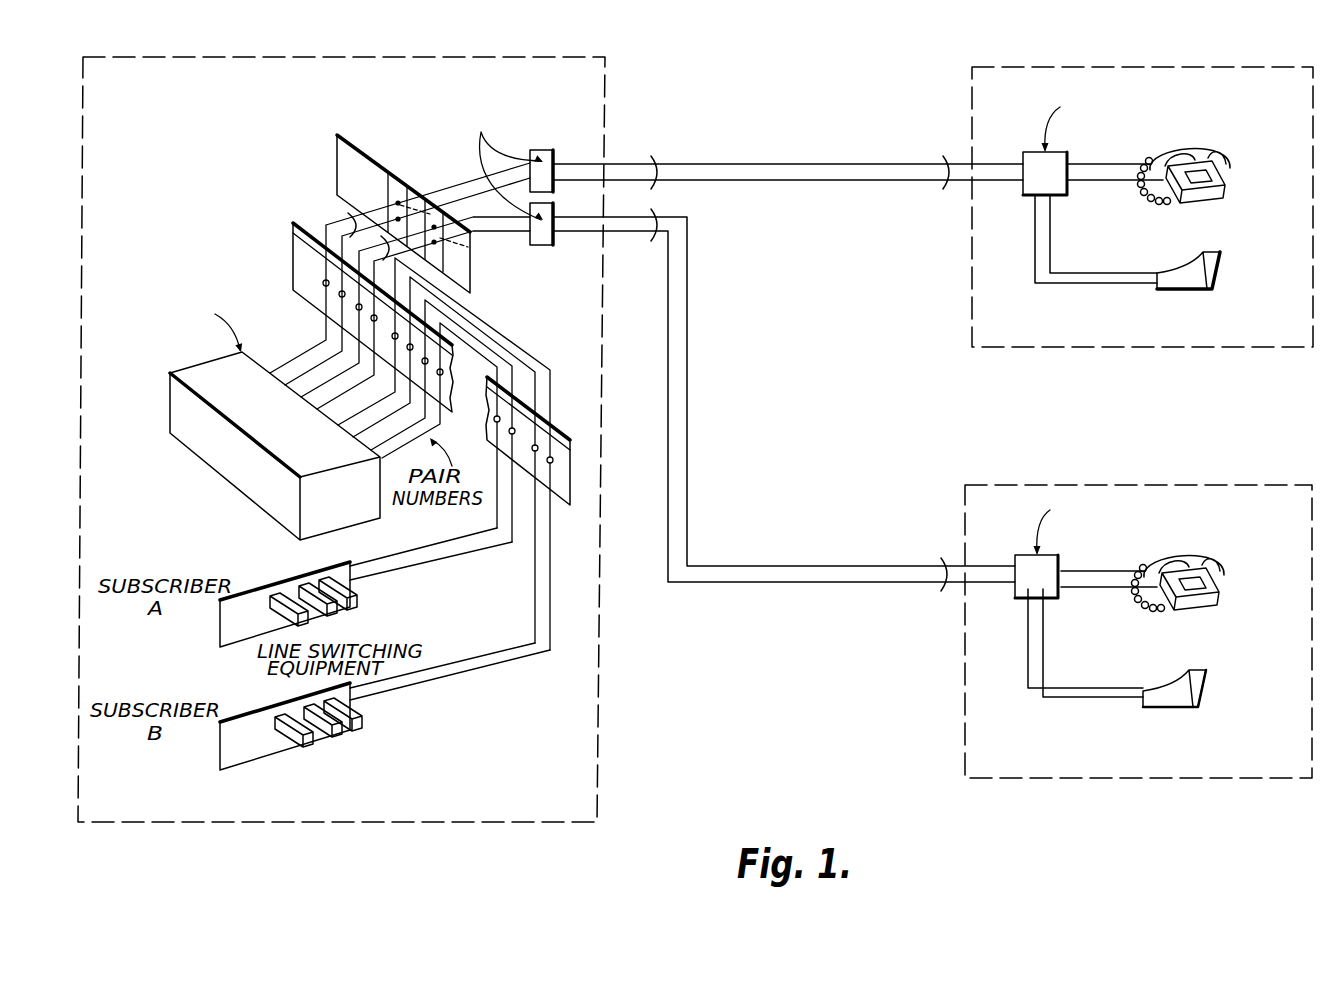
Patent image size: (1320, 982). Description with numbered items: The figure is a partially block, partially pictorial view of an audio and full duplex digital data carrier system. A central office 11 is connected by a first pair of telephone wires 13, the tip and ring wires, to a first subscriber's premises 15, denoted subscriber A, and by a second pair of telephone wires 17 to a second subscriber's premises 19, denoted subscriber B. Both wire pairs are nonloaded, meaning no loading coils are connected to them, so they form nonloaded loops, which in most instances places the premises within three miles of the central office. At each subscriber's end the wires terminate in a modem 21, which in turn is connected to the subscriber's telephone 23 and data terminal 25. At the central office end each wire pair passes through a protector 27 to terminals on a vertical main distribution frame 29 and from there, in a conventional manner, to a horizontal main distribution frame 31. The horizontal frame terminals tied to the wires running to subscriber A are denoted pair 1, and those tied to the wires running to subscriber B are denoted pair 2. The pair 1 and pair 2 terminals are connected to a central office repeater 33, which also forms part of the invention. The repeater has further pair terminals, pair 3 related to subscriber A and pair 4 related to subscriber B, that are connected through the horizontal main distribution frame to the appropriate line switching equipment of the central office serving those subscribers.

The central office 11 is at (585, 691).
The first pair of telephone wires 13 is at (812, 175).
The first subscriber's premises 15 is at (1278, 345).
The second pair of telephone wires 17 is at (822, 578).
The second subscriber's premises 19 is at (1282, 487).
The modem 21 is at (1066, 195).
The telephone 23 is at (1226, 182).
The data terminal 25 is at (1219, 266).
The protector 27 is at (554, 165).
The vertical main distribution frame 29 is at (349, 149).
The horizontal main distribution frame 31 is at (300, 257).
The central office repeater 33 is at (237, 473).
The pair 1 is at (400, 274).
The pair 2 is at (415, 313).
The pair 3 is at (444, 454).
The pair 4 is at (441, 421).